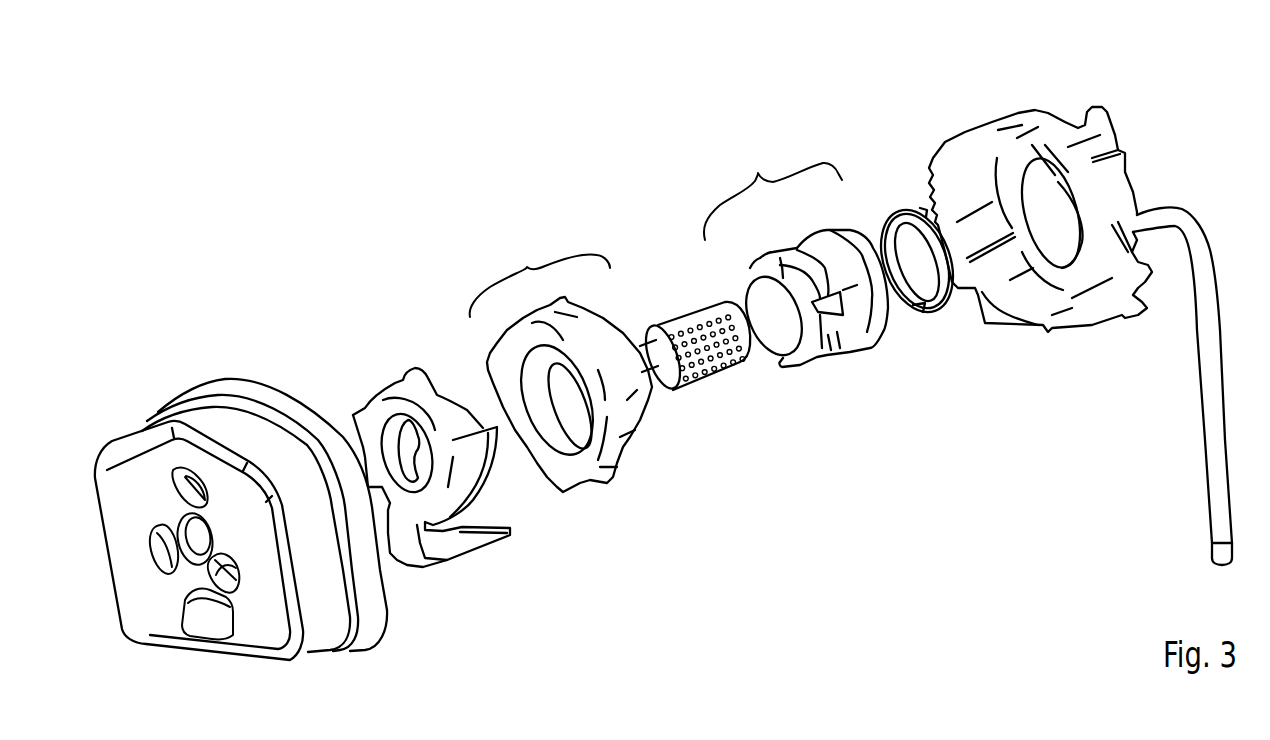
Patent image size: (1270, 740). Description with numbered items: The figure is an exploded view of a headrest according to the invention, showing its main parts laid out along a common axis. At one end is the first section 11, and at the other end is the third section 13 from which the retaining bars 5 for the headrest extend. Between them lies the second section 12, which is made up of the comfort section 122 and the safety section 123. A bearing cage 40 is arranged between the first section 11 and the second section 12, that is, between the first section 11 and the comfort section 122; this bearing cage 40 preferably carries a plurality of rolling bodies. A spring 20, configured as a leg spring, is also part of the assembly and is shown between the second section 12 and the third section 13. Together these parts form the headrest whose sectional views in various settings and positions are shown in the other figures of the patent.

The first section 11 is at (390, 277).
The second section 12 is at (748, 147).
The comfort section 122 is at (658, 473).
The bearing cage 40 is at (757, 382).
The safety section 123 is at (902, 357).
The spring 20 is at (942, 327).
The third section 13 is at (1128, 27).
The retaining bars 5 is at (1220, 437).